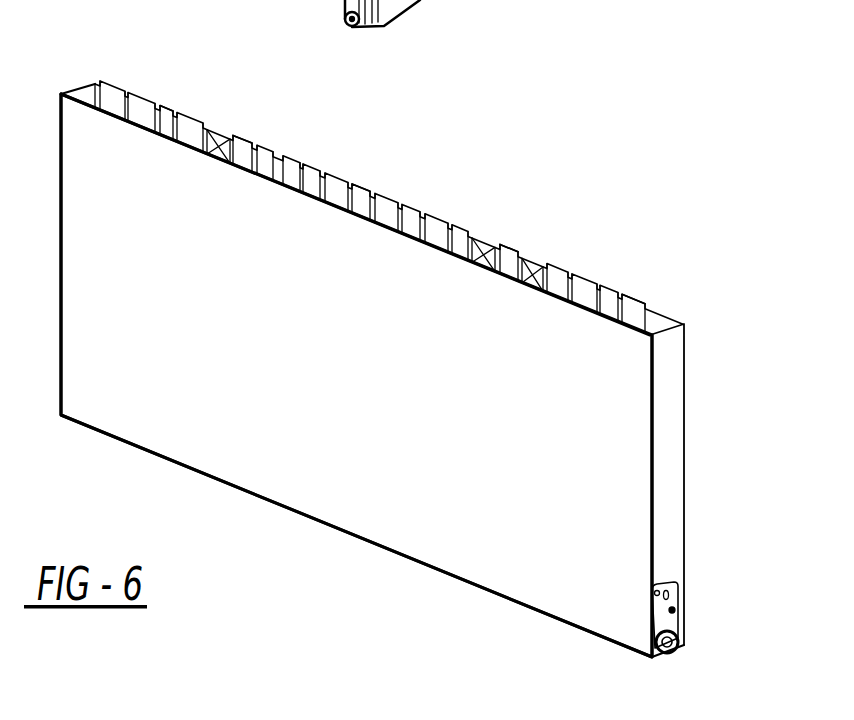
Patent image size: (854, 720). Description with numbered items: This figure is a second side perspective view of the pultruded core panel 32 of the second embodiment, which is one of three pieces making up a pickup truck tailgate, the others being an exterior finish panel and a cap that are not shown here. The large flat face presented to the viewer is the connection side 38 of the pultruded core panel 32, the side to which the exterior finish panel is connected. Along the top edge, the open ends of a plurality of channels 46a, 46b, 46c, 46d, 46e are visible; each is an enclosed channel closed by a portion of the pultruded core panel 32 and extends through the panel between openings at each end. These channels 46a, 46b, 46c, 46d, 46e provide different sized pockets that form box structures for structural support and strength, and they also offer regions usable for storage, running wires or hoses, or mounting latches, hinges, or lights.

The pultruded core panel 32 is at (664, 207).
The connection side 38 is at (562, 443).
The channel 46a is at (165, 125).
The channel 46b is at (247, 155).
The channel 46c is at (362, 207).
The channel 46d is at (508, 266).
The channel 46e is at (634, 316).